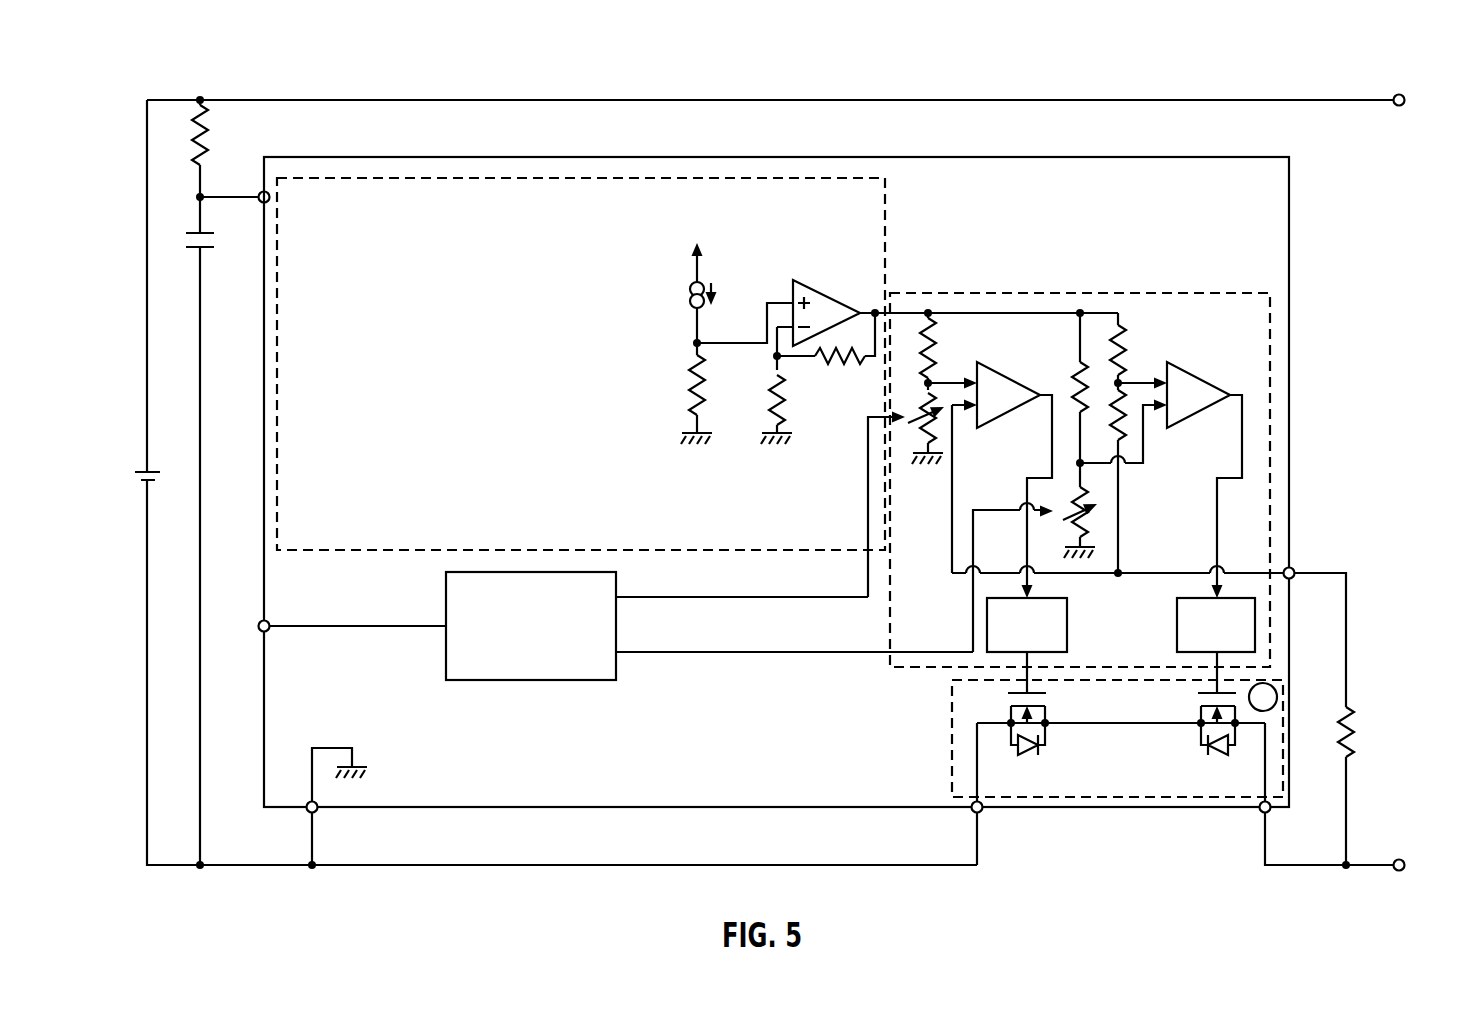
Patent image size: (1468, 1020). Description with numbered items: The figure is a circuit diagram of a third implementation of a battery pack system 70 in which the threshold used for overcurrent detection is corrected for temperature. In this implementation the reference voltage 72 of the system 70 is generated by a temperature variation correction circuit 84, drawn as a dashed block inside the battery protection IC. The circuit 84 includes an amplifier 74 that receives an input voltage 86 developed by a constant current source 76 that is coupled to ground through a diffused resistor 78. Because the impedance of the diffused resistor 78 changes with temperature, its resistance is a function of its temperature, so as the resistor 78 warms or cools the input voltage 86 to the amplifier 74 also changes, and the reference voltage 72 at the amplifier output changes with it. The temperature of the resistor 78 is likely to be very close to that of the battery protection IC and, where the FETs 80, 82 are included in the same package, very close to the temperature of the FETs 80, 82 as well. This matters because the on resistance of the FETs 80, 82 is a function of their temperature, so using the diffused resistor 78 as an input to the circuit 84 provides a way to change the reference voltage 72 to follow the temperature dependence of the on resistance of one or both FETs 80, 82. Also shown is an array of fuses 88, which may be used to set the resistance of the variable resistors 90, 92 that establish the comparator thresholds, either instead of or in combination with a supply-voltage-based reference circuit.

The battery pack system 70 is at (149, 90).
The reference voltage 72 is at (905, 313).
The amplifier 74 is at (793, 292).
The constant current source 76 is at (690, 294).
The diffused resistor 78 is at (690, 380).
The FET 80 is at (1046, 711).
The FET 82 is at (1200, 711).
The temperature variation correction circuit 84 is at (613, 178).
The input voltage 86 is at (750, 345).
The array of fuses 88 is at (446, 604).
The variable resistor 90 is at (915, 410).
The variable resistor 92 is at (1090, 528).